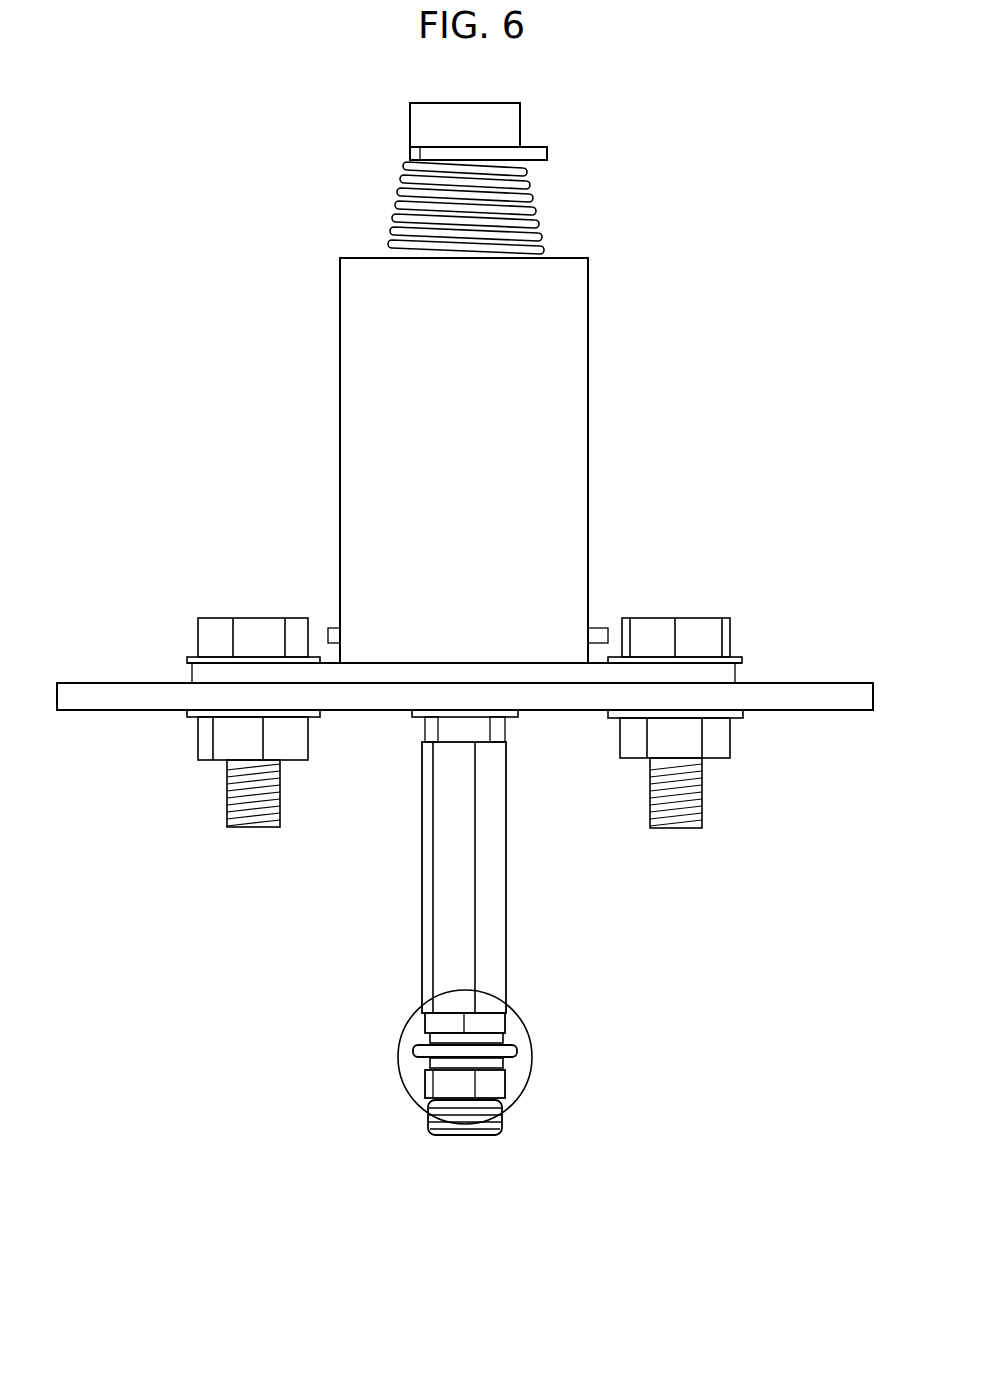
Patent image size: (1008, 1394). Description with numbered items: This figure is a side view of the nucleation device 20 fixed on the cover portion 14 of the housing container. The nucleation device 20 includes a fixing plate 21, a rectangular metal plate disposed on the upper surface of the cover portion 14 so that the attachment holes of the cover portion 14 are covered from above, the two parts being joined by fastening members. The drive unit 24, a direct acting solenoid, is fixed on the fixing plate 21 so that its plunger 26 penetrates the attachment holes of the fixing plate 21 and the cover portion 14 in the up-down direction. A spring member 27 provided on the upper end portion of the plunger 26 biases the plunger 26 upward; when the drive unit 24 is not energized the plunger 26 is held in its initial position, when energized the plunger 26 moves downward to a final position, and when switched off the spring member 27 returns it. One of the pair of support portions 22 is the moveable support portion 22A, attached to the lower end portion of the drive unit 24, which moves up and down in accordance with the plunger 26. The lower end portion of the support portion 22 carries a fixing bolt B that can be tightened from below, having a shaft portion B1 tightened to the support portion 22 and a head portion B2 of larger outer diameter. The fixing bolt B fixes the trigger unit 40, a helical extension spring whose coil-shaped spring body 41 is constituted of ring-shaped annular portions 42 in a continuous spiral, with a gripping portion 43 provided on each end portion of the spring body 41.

The cover portion 14 is at (775, 690).
The nucleation device 20 is at (464, 393).
The fixing plate 21 is at (532, 677).
The support portion 22 is at (544, 877).
The moveable support portion 22A is at (497, 855).
The drive unit 24 is at (528, 452).
The plunger 26 is at (450, 730).
The spring member 27 is at (525, 192).
The trigger unit 40 is at (508, 1121).
The spring body 41 is at (508, 1121).
The annular portion 42 is at (518, 1023).
The gripping portion 43 is at (425, 1049).
The fixing bolt B is at (451, 1135).
The shaft portion B1 is at (480, 1065).
The head portion B2 is at (465, 1137).